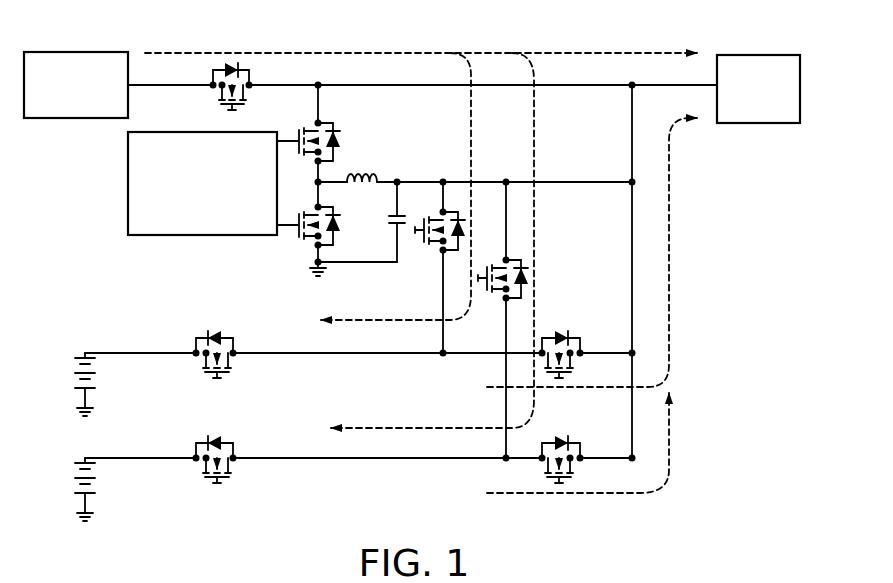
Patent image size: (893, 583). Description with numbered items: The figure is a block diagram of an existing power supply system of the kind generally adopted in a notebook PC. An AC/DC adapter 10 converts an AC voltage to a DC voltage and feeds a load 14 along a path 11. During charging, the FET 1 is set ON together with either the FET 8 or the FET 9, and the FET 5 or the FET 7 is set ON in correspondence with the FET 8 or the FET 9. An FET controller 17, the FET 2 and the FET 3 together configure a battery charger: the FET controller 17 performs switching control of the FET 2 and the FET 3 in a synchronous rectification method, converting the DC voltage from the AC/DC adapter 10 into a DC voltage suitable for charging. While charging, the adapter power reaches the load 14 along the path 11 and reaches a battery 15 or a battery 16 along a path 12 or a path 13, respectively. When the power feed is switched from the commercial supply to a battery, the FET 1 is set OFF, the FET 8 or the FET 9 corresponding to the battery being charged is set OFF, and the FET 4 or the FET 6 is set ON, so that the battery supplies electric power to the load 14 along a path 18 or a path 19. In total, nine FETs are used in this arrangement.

The AC/DC adapter 10 is at (114, 52).
The path 11 is at (590, 52).
The path 12 is at (474, 129).
The path 13 is at (537, 129).
The load 14 is at (784, 55).
The battery 15 is at (62, 355).
The battery 16 is at (62, 460).
The FET controller 17 is at (163, 237).
The path 18 is at (672, 215).
The path 19 is at (672, 447).
The FET FET1 is at (203, 93).
The FET FET2 is at (352, 127).
The FET FET3 is at (298, 250).
The FET FET4 is at (576, 388).
The FET FET5 is at (194, 380).
The FET FET6 is at (575, 494).
The FET FET7 is at (194, 485).
The FET FET8 is at (431, 256).
The FET FET9 is at (533, 259).